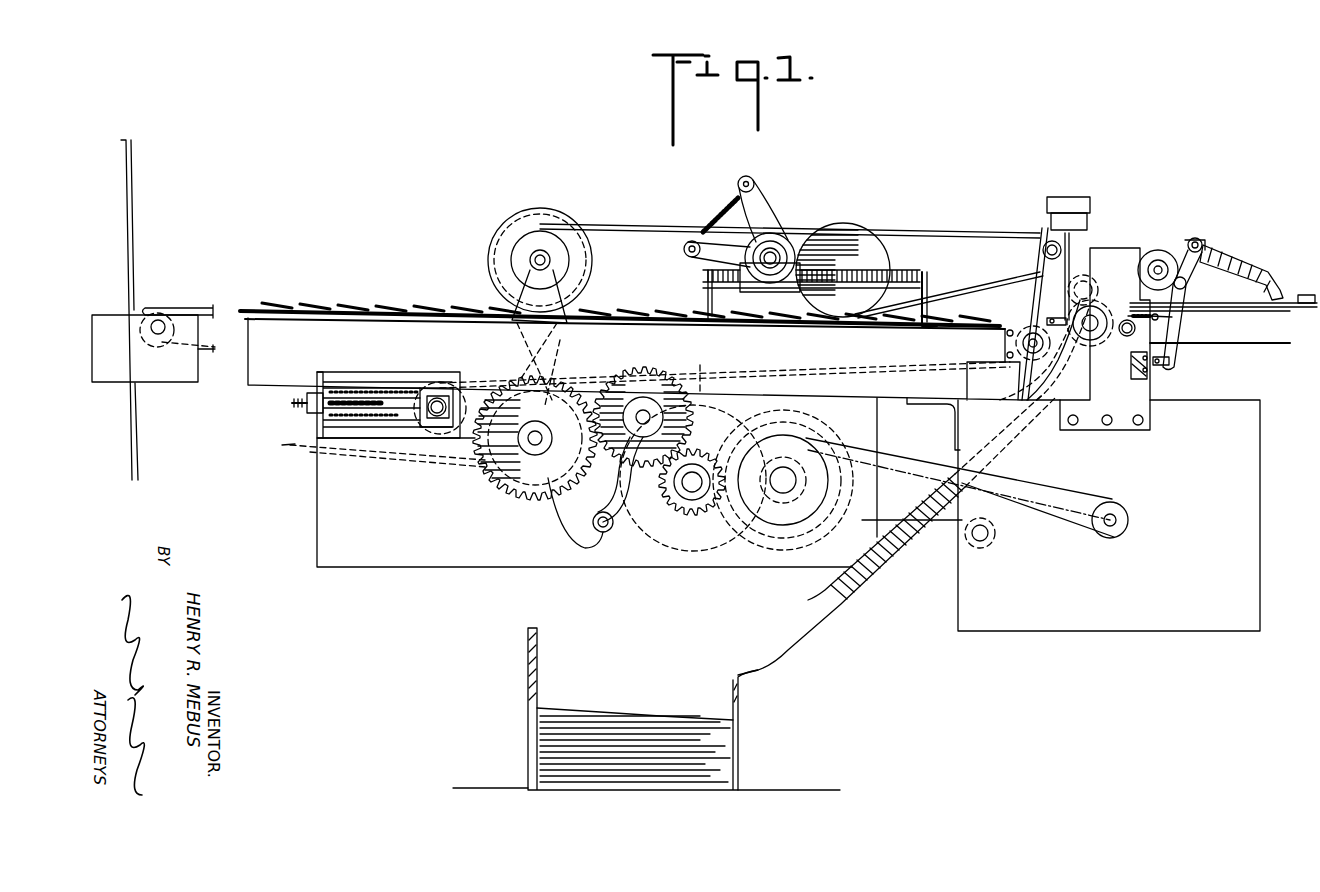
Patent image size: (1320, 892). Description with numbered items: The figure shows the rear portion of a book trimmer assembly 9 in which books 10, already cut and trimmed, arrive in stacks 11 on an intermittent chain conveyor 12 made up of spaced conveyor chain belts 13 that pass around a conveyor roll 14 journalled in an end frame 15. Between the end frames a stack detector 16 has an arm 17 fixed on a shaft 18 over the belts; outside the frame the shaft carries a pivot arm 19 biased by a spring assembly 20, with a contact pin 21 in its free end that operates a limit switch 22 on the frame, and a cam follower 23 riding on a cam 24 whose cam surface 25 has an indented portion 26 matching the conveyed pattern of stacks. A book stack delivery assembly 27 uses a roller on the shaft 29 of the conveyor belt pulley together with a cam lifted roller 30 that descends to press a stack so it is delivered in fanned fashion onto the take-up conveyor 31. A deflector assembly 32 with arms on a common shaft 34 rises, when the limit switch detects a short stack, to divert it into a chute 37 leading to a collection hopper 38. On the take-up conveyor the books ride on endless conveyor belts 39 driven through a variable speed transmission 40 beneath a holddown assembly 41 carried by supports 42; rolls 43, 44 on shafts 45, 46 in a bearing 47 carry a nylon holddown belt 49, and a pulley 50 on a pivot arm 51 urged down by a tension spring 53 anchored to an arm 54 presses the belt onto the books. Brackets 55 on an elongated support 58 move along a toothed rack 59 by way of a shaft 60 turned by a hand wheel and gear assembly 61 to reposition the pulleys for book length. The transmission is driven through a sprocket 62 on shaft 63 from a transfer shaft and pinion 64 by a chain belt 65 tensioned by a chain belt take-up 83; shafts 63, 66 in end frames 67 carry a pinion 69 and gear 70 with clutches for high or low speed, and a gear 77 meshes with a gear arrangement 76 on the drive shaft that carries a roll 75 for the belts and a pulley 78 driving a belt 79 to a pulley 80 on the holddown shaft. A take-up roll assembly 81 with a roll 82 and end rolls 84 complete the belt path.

The book trimmer assembly 9 is at (1258, 225).
The books 10 is at (338, 308).
The stacks 11 is at (1299, 312).
The conveyor 12 is at (1258, 348).
The conveyor chain belts 13 is at (1256, 342).
The conveyor roll 14 is at (1094, 352).
The end frame 15 is at (1152, 391).
The stack detector 16 is at (1240, 250).
The arm 17 is at (1270, 272).
The shaft 18 is at (1205, 238).
The pivot arm 19 is at (1178, 326).
The spring assembly 20 is at (1133, 300).
The contact pin 21 is at (1172, 361).
The limit switch 22 is at (1128, 389).
The cam follower 23 is at (1188, 283).
The cam 24 is at (1158, 250).
The cam surface 25 is at (1142, 252).
The indented portion 26 is at (1175, 252).
The book stack delivery assembly 27 is at (1131, 209).
The shaft 29 is at (1100, 315).
The cam lifted roller 30 is at (1087, 278).
The take-up conveyor 31 is at (401, 249).
The deflector assembly 32 is at (1040, 307).
The common shaft 34 is at (1046, 192).
The chute 37 is at (862, 586).
The collection hopper 38 is at (728, 738).
The conveyor belts 39 is at (905, 362).
The variable speed transmission 40 is at (533, 530).
The holddown assembly 41 is at (672, 184).
The supports 42 is at (570, 308).
The roll 43 is at (570, 252).
The roll 44 is at (1040, 232).
The shaft 45 is at (530, 258).
The shaft 46 is at (1043, 251).
The bearing 47 is at (526, 266).
The holddown belt 49 is at (648, 226).
The pulley 50 is at (870, 240).
The pivot arm 51 is at (700, 262).
The tension spring 53 is at (712, 222).
The arm 54 is at (764, 200).
The bracket 55 is at (756, 304).
The elongated support 58 is at (937, 276).
The toothed rack 59 is at (912, 275).
The shaft 60 is at (775, 252).
The hand wheel and gear assembly 61 is at (770, 283).
The sprocket 62 is at (830, 450).
The shaft 63 is at (778, 493).
The transfer shaft and pinion 64 is at (1120, 510).
The chain belt 65 is at (1032, 480).
The shaft 66 is at (645, 505).
The end frames 67 is at (600, 568).
The pinion 69 is at (690, 500).
The gear 70 is at (846, 418).
The roll 75 is at (548, 400).
The gear arrangement 76 is at (518, 516).
The gear 77 is at (631, 479).
The pulley 78 is at (488, 466).
The belt 79 is at (528, 350).
The pulley 80 is at (528, 210).
The take-up roll assembly 81 is at (287, 418).
The roll 82 is at (410, 388).
The chain belt take-up 83 is at (1048, 567).
The rolls 84 is at (1020, 335).